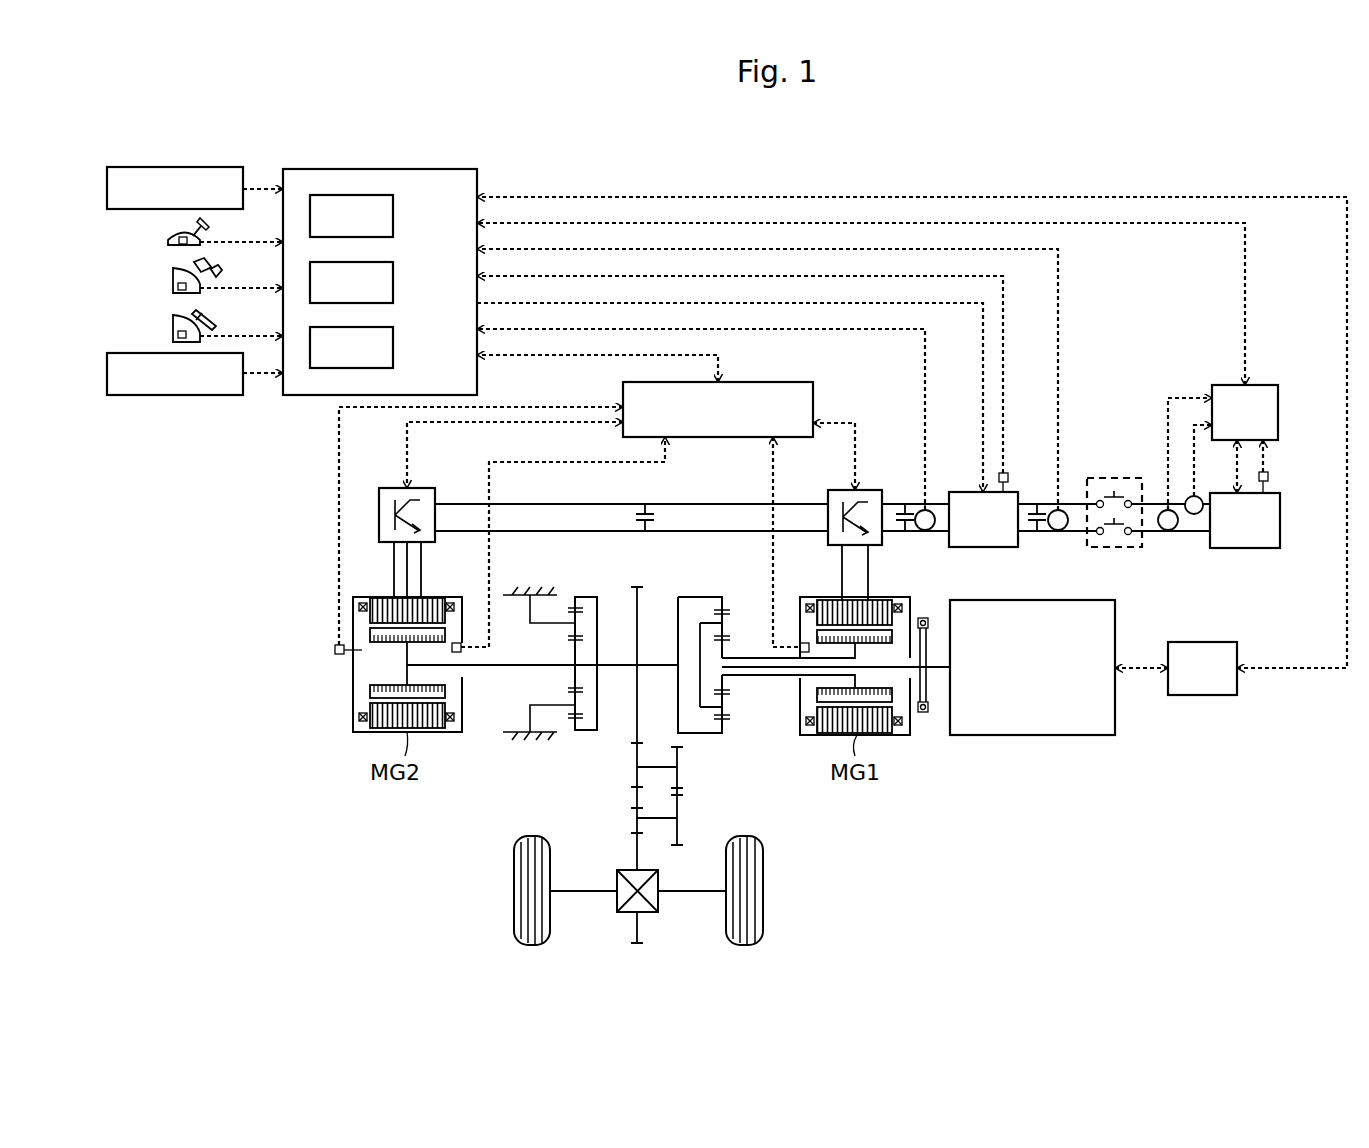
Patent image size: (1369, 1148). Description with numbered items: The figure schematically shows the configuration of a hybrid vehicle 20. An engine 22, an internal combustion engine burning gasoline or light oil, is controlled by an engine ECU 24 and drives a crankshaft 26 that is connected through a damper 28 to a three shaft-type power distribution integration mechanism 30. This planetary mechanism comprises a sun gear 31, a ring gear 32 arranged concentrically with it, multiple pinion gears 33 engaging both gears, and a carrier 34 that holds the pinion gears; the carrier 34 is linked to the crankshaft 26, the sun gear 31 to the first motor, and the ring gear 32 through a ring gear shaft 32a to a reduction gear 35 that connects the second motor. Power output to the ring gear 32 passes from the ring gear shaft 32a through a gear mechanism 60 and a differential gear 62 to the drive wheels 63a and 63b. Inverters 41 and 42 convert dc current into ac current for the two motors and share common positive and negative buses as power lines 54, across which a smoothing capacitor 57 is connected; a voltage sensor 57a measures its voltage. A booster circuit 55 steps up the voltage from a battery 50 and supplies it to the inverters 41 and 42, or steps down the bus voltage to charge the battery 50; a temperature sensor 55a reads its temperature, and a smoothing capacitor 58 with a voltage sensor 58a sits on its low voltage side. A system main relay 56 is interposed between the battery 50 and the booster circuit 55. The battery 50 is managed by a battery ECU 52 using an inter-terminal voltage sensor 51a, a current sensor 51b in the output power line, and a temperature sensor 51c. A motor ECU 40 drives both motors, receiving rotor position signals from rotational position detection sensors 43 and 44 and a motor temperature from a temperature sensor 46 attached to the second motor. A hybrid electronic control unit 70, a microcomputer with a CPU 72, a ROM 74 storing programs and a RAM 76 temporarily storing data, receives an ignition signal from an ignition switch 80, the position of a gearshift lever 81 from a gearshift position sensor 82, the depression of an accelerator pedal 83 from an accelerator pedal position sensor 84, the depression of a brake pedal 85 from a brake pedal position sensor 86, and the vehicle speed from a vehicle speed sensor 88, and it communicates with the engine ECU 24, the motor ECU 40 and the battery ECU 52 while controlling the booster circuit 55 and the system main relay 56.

The hybrid vehicle 20 is at (993, 145).
The engine 22 is at (1032, 735).
The engine ECU 24 is at (1203, 695).
The crankshaft 26 is at (942, 670).
The damper 28 is at (923, 716).
The power distribution integration mechanism 30 is at (766, 640).
The sun gear 31 is at (723, 680).
The ring gear 32 is at (723, 726).
The ring gear shaft 32a is at (652, 665).
The pinion gears 33 is at (723, 700).
The carrier 34 is at (700, 623).
The reduction gear 35 is at (578, 585).
The motor ECU 40 is at (813, 397).
The inverter 41 is at (862, 490).
The inverter 42 is at (417, 488).
The rotational position detection sensor 43 is at (804, 642).
The rotational position detection sensor 44 is at (457, 640).
The temperature sensor 46 is at (339, 660).
The battery 50 is at (1245, 548).
The voltage sensor 51a is at (1168, 531).
The current sensor 51b is at (1194, 514).
The temperature sensor 51c is at (1268, 477).
The battery ECU 52 is at (1262, 385).
The power lines 54 is at (716, 504).
The booster circuit 55 is at (983, 547).
The temperature sensor 55a is at (1008, 478).
The system main relay 56 is at (1110, 478).
The smoothing capacitor 57 is at (905, 532).
The voltage sensor 57a is at (925, 531).
The smoothing capacitor 58 is at (1037, 532).
The voltage sensor 58a is at (1058, 531).
The gear mechanism 60 is at (700, 802).
The differential gear 62 is at (658, 897).
The drive wheel 63a is at (514, 891).
The drive wheel 63b is at (763, 891).
The hybrid electronic control unit 70 is at (378, 169).
The CPU 72 is at (393, 216).
The ROM 74 is at (393, 282).
The RAM 76 is at (393, 347).
The ignition switch 80 is at (107, 186).
The gearshift lever 81 is at (200, 225).
The gearshift position sensor 82 is at (168, 242).
The accelerator pedal 83 is at (200, 268).
The accelerator pedal position sensor 84 is at (173, 288).
The brake pedal 85 is at (198, 317).
The brake pedal position sensor 86 is at (173, 337).
The vehicle speed sensor 88 is at (107, 371).